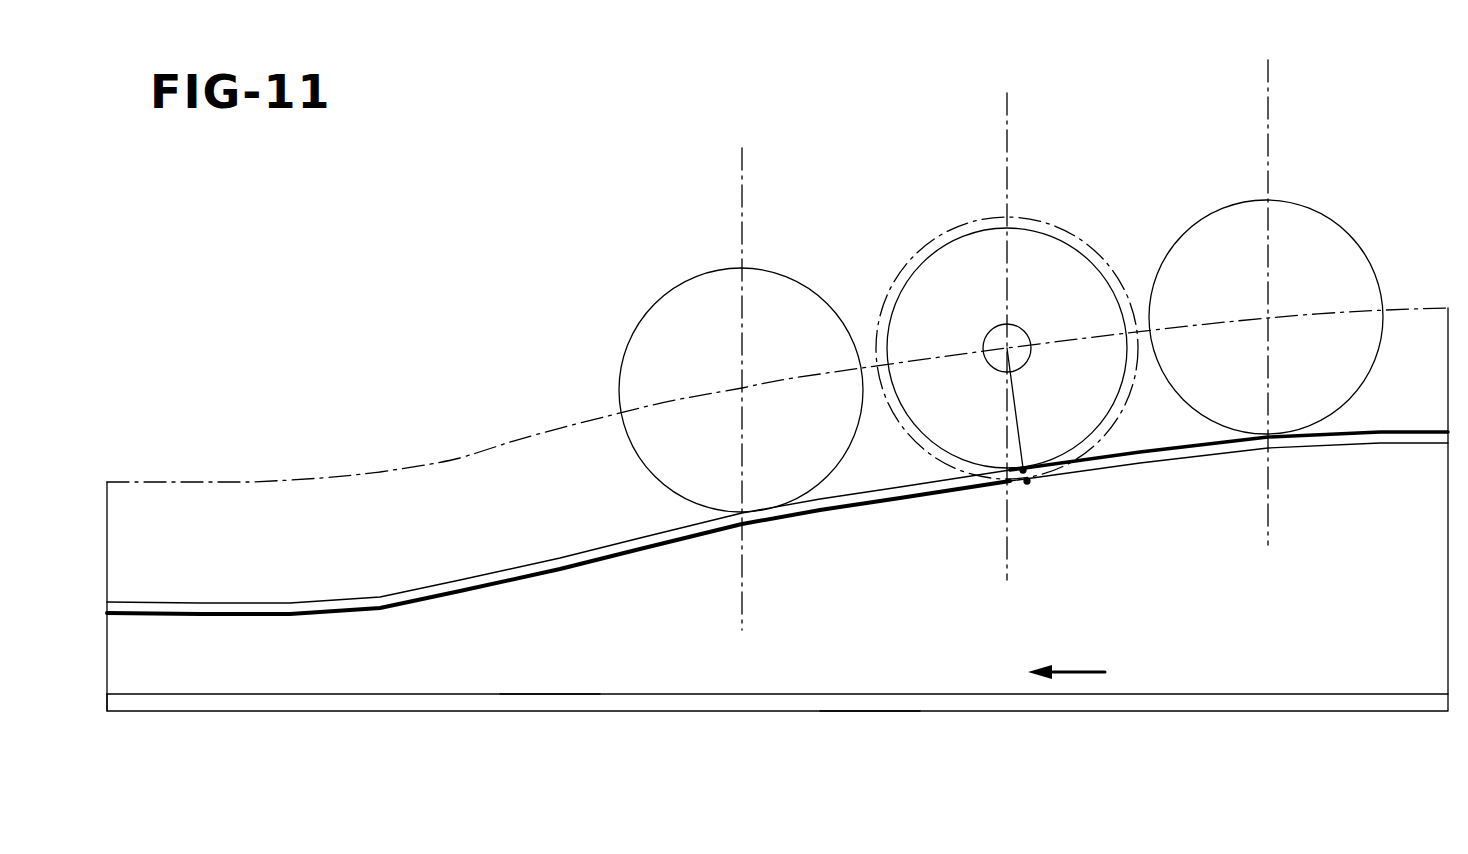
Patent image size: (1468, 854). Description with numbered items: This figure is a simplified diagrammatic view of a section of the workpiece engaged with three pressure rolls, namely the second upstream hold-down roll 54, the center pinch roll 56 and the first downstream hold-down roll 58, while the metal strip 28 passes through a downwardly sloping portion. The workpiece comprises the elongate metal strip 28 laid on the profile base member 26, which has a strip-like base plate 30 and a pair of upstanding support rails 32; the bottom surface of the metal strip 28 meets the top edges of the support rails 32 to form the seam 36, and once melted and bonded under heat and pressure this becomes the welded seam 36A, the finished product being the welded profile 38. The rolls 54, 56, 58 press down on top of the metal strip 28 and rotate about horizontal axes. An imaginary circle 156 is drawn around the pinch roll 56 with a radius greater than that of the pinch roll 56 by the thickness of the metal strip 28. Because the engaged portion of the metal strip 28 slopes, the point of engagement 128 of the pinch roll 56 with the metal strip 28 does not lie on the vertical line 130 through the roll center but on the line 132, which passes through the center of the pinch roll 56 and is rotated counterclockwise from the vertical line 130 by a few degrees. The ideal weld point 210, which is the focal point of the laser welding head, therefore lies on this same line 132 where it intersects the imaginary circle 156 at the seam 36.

The profile base member 26 is at (1275, 702).
The metal strip 28 is at (545, 562).
The base plate 30 is at (872, 695).
The support rails 32 is at (553, 675).
The seam 36 is at (1330, 452).
The welded seam 36A is at (418, 608).
The welded profile 38 is at (263, 700).
The second upstream hold-down roll 54 is at (1295, 201).
The center pinch roll 56 is at (1050, 232).
The first downstream hold-down roll 58 is at (782, 272).
The point of engagement 128 is at (1025, 468).
The vertical line 130 is at (998, 123).
The line 132 is at (1012, 440).
The imaginary circle 156 is at (962, 222).
The ideal weld point 210 is at (1027, 481).